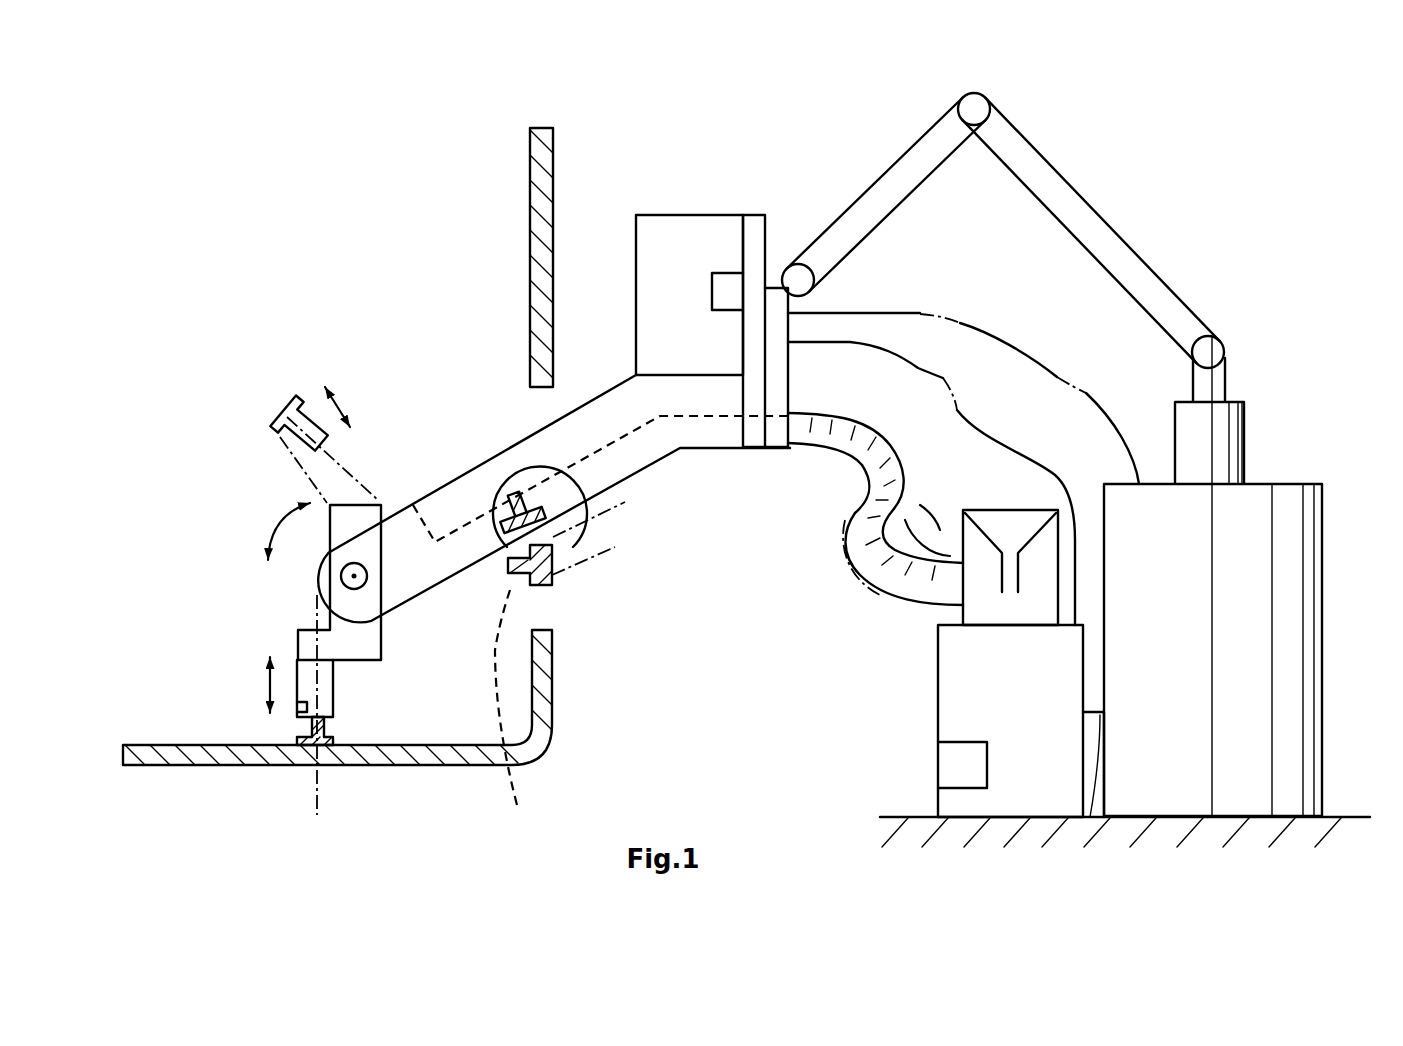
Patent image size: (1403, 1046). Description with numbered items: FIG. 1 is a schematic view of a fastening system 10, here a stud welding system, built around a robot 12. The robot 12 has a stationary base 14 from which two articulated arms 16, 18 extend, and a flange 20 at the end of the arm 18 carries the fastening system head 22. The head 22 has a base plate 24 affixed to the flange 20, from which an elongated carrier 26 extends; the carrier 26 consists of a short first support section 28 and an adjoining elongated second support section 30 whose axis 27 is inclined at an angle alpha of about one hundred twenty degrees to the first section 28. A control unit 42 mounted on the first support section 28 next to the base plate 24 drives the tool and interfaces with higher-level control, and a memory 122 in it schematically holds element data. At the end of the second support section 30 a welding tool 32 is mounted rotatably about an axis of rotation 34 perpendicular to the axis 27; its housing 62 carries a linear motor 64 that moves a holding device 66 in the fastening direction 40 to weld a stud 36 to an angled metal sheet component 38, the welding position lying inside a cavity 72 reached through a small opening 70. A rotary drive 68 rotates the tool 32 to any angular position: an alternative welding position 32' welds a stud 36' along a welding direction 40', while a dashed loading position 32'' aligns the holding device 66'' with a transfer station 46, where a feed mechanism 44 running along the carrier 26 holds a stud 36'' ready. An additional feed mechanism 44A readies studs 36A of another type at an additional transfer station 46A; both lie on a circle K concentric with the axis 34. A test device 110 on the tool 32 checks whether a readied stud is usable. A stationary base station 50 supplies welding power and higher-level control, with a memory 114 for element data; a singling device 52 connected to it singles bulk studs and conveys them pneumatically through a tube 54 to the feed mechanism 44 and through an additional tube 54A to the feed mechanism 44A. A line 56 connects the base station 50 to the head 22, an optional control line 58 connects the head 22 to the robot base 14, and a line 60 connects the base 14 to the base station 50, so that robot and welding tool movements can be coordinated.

The fastening system 10 is at (1138, 188).
The robot 12 is at (1243, 345).
The stationary base 14 is at (1250, 517).
The arm 16 is at (1135, 272).
The arm 18 is at (904, 178).
The flange 20 is at (774, 435).
The fastening system head 22 is at (734, 168).
The base plate 24 is at (750, 247).
The elongated carrier 26 is at (626, 478).
The axis of the second support section 27 is at (621, 480).
The first support section 28 is at (700, 393).
The second support section 30 is at (540, 450).
The fastening tool 32 is at (449, 690).
The welding tool in alternative welding position 32' is at (269, 449).
The welding tool in loading position 32'' is at (458, 595).
The axis of rotation 34 is at (362, 574).
The welding stud 36 is at (373, 724).
The stud 36' is at (245, 377).
The stud held ready at transfer station 36'' is at (544, 477).
The stud of additional type 36A is at (537, 587).
The component 38 is at (350, 757).
The fastening direction 40 is at (218, 681).
The welding direction 40' is at (340, 381).
The control unit 42 is at (670, 240).
The feed mechanism 44 is at (640, 455).
The additional feed mechanism 44A is at (574, 574).
The transfer station 46 is at (522, 492).
The additional transfer station 46A is at (527, 598).
The base station 50 is at (945, 720).
The singling device 52 is at (1043, 562).
The tube 54 is at (864, 572).
The supply line branch 54A is at (906, 560).
The line 56 is at (912, 368).
The line 58 is at (981, 325).
The line 60 is at (1083, 818).
The housing 62 is at (378, 500).
The fastening drive device 64 is at (300, 563).
The holding device 66 is at (268, 705).
The holding device in loading position 66'' is at (445, 459).
The rotary drive 68 is at (345, 590).
The opening 70 is at (540, 393).
The cavity 72 is at (389, 285).
The test device 110 is at (300, 713).
The memory of base station 114 is at (953, 767).
The drive motor 122 is at (732, 290).
The circle K is at (511, 716).
The angle alpha is at (587, 395).